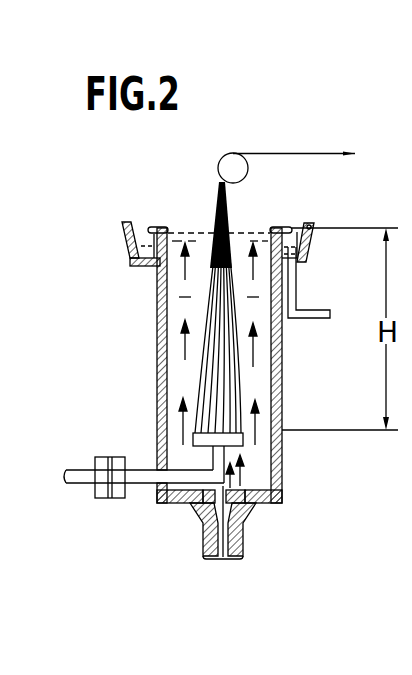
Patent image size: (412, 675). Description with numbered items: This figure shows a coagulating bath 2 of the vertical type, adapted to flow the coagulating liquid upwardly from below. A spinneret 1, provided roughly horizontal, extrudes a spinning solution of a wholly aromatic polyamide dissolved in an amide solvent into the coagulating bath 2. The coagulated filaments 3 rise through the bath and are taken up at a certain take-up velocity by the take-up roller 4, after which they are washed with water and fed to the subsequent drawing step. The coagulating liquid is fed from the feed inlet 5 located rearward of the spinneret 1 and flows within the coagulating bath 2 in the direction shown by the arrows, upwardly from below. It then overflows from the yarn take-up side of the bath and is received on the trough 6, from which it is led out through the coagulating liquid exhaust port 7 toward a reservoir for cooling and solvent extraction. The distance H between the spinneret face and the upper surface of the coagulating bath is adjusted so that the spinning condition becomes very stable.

The spinneret 1 is at (243, 440).
The coagulating bath 2 is at (283, 368).
The filaments 3 is at (202, 378).
The take-up roller 4 is at (229, 164).
The feed inlet for the coagulating liquid 5 is at (199, 512).
The trough 6 is at (310, 228).
The coagulating liquid exhaust port 7 is at (299, 268).